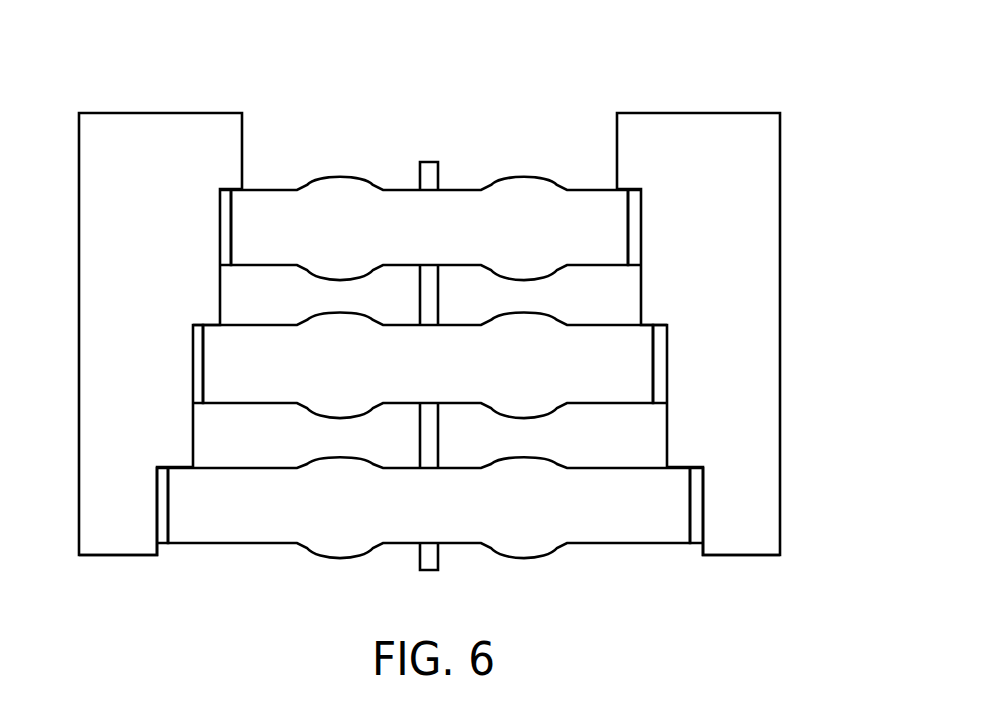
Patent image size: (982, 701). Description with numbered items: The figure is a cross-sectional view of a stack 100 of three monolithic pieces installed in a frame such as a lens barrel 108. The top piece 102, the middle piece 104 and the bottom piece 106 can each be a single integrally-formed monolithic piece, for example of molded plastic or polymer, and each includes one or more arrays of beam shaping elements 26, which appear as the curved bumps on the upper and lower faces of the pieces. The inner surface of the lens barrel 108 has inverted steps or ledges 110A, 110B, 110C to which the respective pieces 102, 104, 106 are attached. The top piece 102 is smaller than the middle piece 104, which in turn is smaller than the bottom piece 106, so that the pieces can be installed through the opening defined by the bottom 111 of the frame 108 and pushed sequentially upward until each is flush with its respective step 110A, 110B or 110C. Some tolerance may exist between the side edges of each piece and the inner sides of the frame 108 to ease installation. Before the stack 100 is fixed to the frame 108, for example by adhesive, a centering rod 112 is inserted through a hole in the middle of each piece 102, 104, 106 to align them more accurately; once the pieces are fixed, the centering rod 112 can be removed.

The stack 100 is at (630, 82).
The beam shaping elements 26 is at (348, 177).
The top piece 102 is at (453, 240).
The middle piece 104 is at (453, 375).
The bottom piece 106 is at (449, 520).
The lens barrel 108 is at (87, 150).
The step 110A is at (228, 195).
The step 110B is at (206, 333).
The step 110C is at (176, 470).
The bottom of the frame 111 is at (143, 557).
The centering rod 112 is at (436, 160).